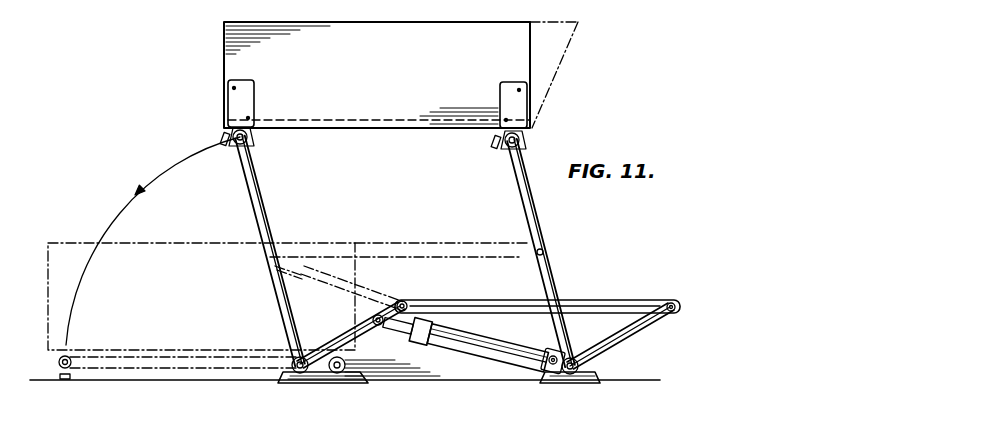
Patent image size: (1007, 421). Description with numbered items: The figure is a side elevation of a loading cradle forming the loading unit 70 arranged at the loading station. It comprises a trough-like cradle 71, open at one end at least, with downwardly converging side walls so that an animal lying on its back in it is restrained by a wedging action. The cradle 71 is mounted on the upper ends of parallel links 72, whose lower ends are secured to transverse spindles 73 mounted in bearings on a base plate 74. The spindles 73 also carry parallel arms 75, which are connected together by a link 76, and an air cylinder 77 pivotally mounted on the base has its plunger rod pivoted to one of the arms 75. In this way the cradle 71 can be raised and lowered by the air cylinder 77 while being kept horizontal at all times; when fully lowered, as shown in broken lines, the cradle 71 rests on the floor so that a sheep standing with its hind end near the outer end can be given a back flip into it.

The loading unit 70 is at (126, 171).
The trough-like cradle 71 is at (179, 256).
The parallel links 72 is at (263, 199).
The transverse spindles 73 is at (305, 373).
The base plate 74 is at (418, 374).
The parallel arms 75 is at (275, 303).
The link 76 is at (480, 249).
The air cylinder 77 is at (367, 298).